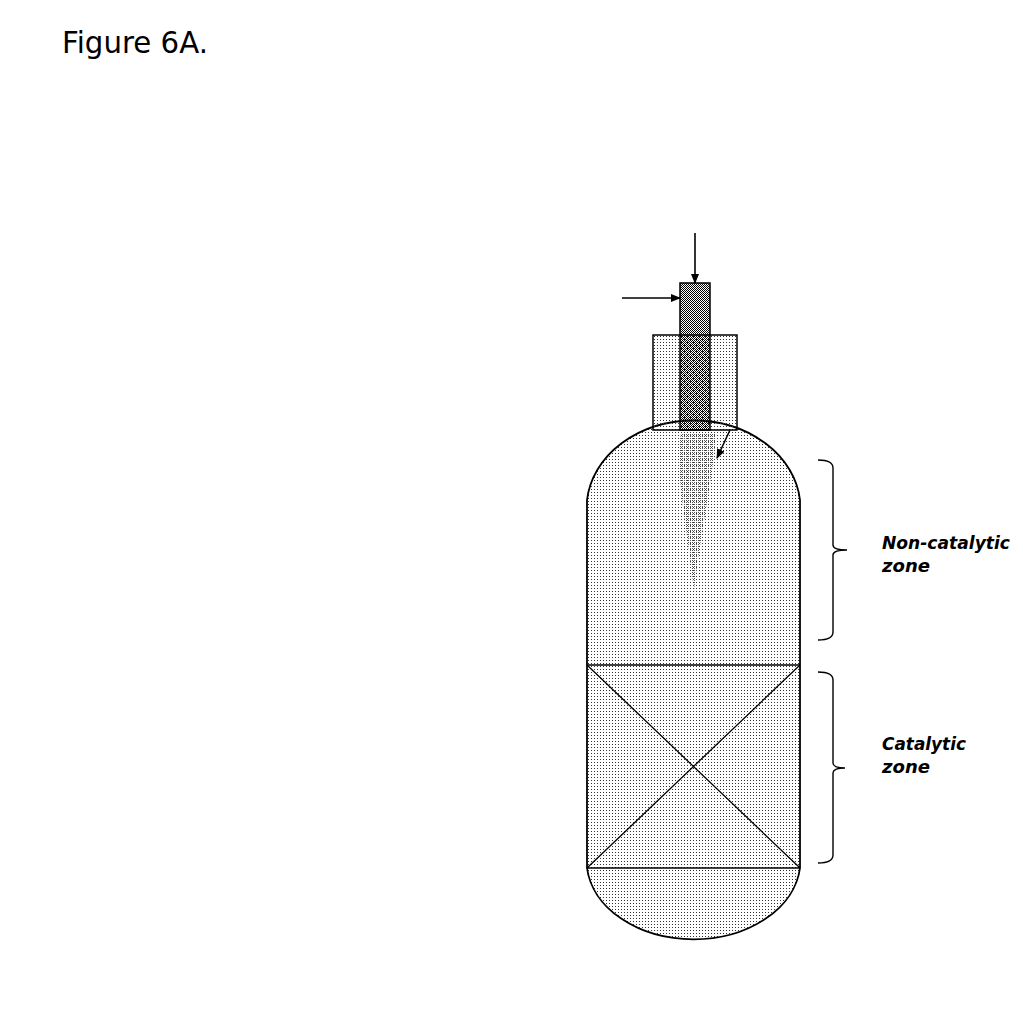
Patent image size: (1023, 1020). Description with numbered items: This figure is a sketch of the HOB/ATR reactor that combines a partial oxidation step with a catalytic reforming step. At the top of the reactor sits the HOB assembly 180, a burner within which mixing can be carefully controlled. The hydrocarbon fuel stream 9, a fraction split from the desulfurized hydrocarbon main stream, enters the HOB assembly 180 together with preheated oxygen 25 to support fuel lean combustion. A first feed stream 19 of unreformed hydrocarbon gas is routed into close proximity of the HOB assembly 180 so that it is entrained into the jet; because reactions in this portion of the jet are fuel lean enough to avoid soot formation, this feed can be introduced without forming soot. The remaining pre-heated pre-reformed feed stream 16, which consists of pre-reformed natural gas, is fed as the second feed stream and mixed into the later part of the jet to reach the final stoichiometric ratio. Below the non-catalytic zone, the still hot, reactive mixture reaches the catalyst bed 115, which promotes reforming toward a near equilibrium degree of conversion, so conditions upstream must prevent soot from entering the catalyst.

The hydrocarbon fuel stream 9 is at (695, 245).
The preheated oxygen 25 is at (633, 301).
The HOB assembly 180 is at (722, 297).
The first feed stream 19 is at (740, 352).
The pre-heated pre-reformed feed stream 16 is at (617, 440).
The catalyst bed 115 is at (693, 751).